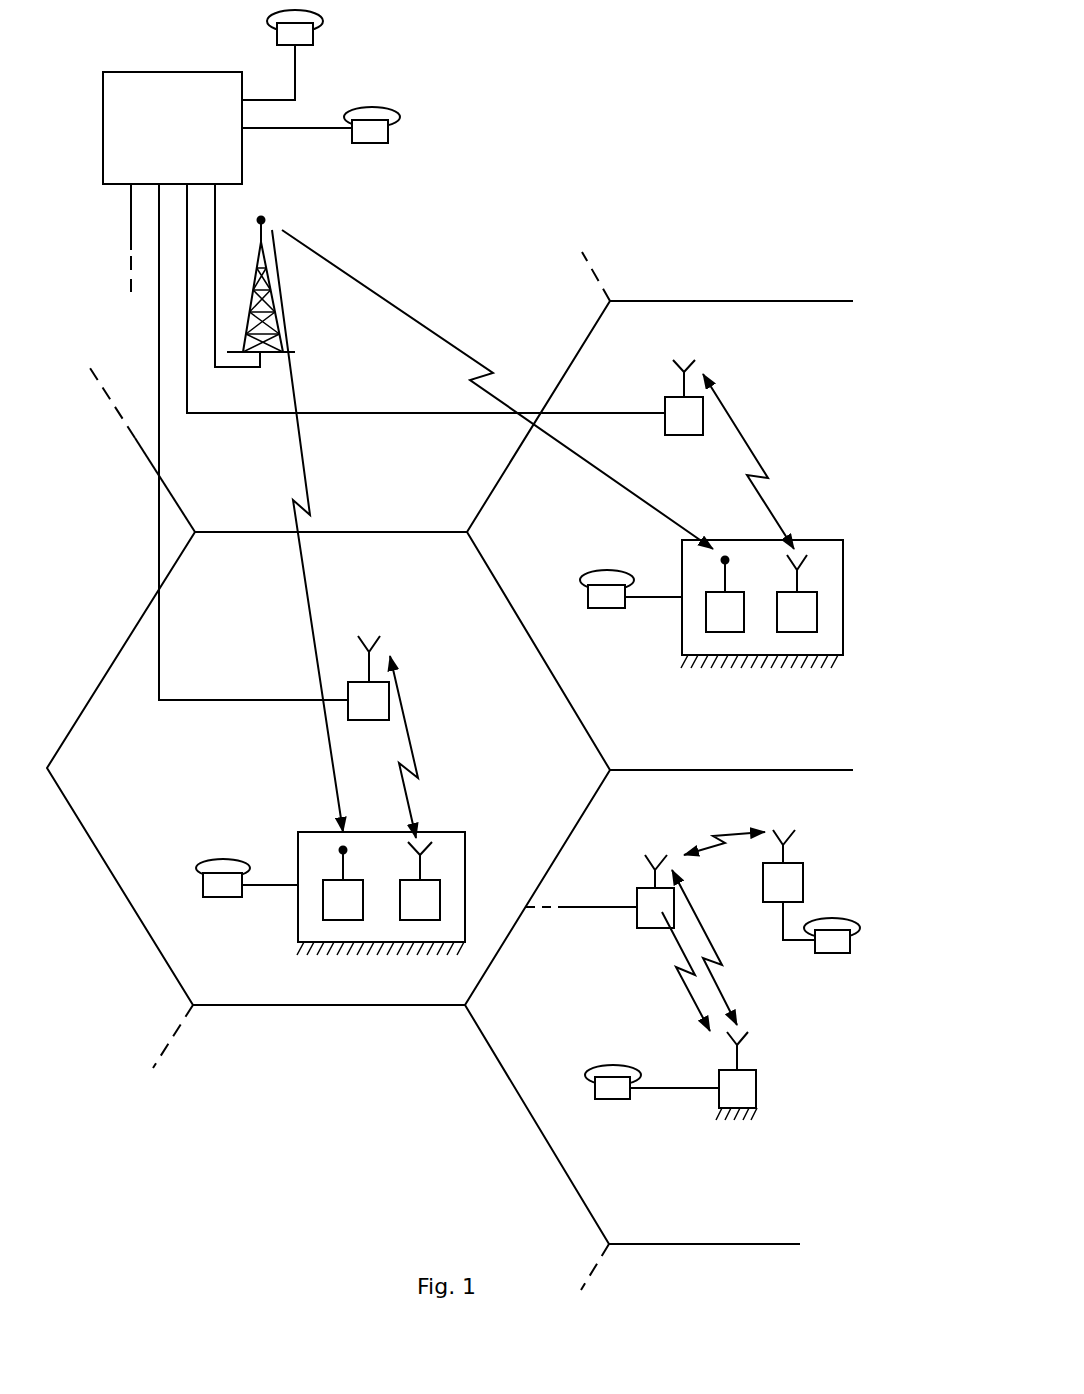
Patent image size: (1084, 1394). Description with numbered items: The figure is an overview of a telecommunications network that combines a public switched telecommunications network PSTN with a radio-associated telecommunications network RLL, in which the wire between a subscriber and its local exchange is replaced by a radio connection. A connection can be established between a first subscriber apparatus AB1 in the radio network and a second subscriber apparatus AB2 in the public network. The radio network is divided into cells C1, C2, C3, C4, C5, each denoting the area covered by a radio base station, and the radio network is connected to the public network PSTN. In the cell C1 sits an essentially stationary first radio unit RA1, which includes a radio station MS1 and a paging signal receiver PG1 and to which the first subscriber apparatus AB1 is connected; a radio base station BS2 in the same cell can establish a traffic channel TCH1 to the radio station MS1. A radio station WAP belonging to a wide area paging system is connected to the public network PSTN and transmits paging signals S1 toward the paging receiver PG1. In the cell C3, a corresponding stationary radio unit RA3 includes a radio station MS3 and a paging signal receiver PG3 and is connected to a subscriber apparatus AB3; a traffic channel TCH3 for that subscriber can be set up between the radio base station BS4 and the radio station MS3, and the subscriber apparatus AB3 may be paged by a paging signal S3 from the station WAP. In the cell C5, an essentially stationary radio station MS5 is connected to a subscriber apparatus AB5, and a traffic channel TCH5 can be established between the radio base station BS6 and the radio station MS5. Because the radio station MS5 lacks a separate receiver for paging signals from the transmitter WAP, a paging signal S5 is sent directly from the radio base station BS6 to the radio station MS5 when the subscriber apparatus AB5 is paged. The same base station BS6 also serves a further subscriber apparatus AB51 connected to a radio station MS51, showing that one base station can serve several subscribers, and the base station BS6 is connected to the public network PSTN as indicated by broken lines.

The public switched telecommunications network PSTN is at (172, 83).
The second subscriber apparatus AB2 is at (378, 133).
The radio-associated telecommunications network RLL is at (667, 100).
The radio station of a wide area paging system WAP is at (267, 322).
The cell C1 is at (328, 768).
The cell C2 is at (273, 450).
The cell C3 is at (660, 511).
The cell C4 is at (304, 1036).
The cell C5 is at (632, 1141).
The paging signal S1 is at (328, 755).
The paging signal S3 is at (628, 490).
The paging signal S5 is at (685, 988).
The radio base station BS2 is at (377, 708).
The radio base station BS4 is at (692, 425).
The radio base station BS6 is at (660, 910).
The traffic channel TCH1 is at (407, 792).
The traffic channel TCH3 is at (767, 502).
The traffic channel TCH5 is at (725, 1002).
The first radio unit RA1 is at (292, 930).
The radio unit RA3 is at (706, 663).
The paging signal receiver PG1 is at (343, 903).
The paging signal receiver PG3 is at (727, 622).
The radio station MS1 is at (430, 902).
The radio station MS3 is at (797, 622).
The radio station MS5 is at (735, 1098).
The radio station MS51 is at (795, 892).
The first subscriber apparatus AB1 is at (203, 885).
The subscriber apparatus AB3 is at (603, 608).
The subscriber apparatus AB5 is at (613, 1100).
The subscriber apparatus AB51 is at (832, 955).